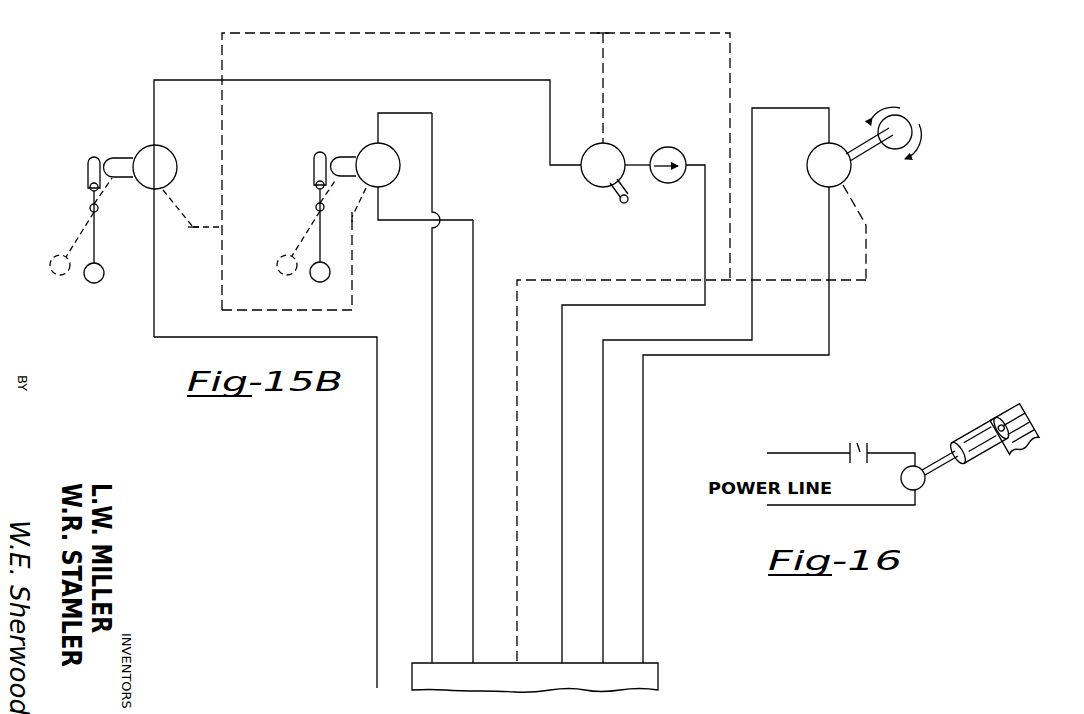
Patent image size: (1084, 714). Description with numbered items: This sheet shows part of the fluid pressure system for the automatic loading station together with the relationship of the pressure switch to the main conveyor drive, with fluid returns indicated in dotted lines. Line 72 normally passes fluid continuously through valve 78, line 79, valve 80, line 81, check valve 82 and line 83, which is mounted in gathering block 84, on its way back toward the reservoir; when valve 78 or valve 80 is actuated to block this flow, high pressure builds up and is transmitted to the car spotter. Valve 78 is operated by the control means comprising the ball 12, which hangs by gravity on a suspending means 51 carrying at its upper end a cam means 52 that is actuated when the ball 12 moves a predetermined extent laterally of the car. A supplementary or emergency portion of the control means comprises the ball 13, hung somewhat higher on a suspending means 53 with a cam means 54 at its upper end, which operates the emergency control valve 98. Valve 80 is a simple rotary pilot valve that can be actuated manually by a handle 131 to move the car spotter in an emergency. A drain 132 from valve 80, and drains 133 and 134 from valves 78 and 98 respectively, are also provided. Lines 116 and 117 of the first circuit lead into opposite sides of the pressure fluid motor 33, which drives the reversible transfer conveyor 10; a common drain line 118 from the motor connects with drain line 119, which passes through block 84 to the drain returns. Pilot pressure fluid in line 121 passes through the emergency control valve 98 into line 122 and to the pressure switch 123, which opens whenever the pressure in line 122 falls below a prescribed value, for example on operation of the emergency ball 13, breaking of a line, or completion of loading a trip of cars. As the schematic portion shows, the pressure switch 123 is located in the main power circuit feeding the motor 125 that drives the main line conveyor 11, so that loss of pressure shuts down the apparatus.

In FIG. 15B, the reversible transfer conveyor 10 is at (928, 122).
In FIG. 16, the main line conveyor 11 is at (1032, 429).
In FIG. 15B, the ball 12 is at (100, 281).
In FIG. 15B, the ball 13 is at (321, 266).
In FIG. 15B, the pressure fluid motor 33 is at (848, 174).
In FIG. 15B, the suspending means 51 is at (96, 232).
In FIG. 15B, the cam means 52 is at (88, 178).
In FIG. 15B, the suspending means 53 is at (322, 232).
In FIG. 15B, the cam means 54 is at (316, 166).
In FIG. 15B, the line 72 is at (377, 598).
In FIG. 15B, the valve 78 is at (162, 162).
In FIG. 15B, the line 79 is at (275, 80).
In FIG. 15B, the rotary pilot valve 80 is at (597, 181).
In FIG. 15B, the line 81 is at (635, 164).
In FIG. 15B, the check valve 82 is at (680, 180).
In FIG. 15B, the line 83 is at (618, 305).
In FIG. 15B, the gathering block 84 is at (542, 686).
In FIG. 15B, the emergency control valve 98 is at (383, 151).
In FIG. 15B, the line 116 is at (797, 108).
In FIG. 15B, the line 117 is at (828, 232).
In FIG. 15B, the common drain line 118 is at (806, 282).
In FIG. 15B, the drain line 119 is at (555, 280).
In FIG. 15B, the line 121 is at (474, 616).
In FIG. 15B, the line 122 is at (434, 570).
In FIG. 16, the pressure switch 123 is at (858, 444).
In FIG. 16, the motor 125 is at (925, 485).
In FIG. 15B, the handle 131 is at (622, 204).
In FIG. 15B, the drain 132 is at (603, 100).
In FIG. 15B, the drain 133 is at (193, 228).
In FIG. 15B, the drain 134 is at (353, 243).